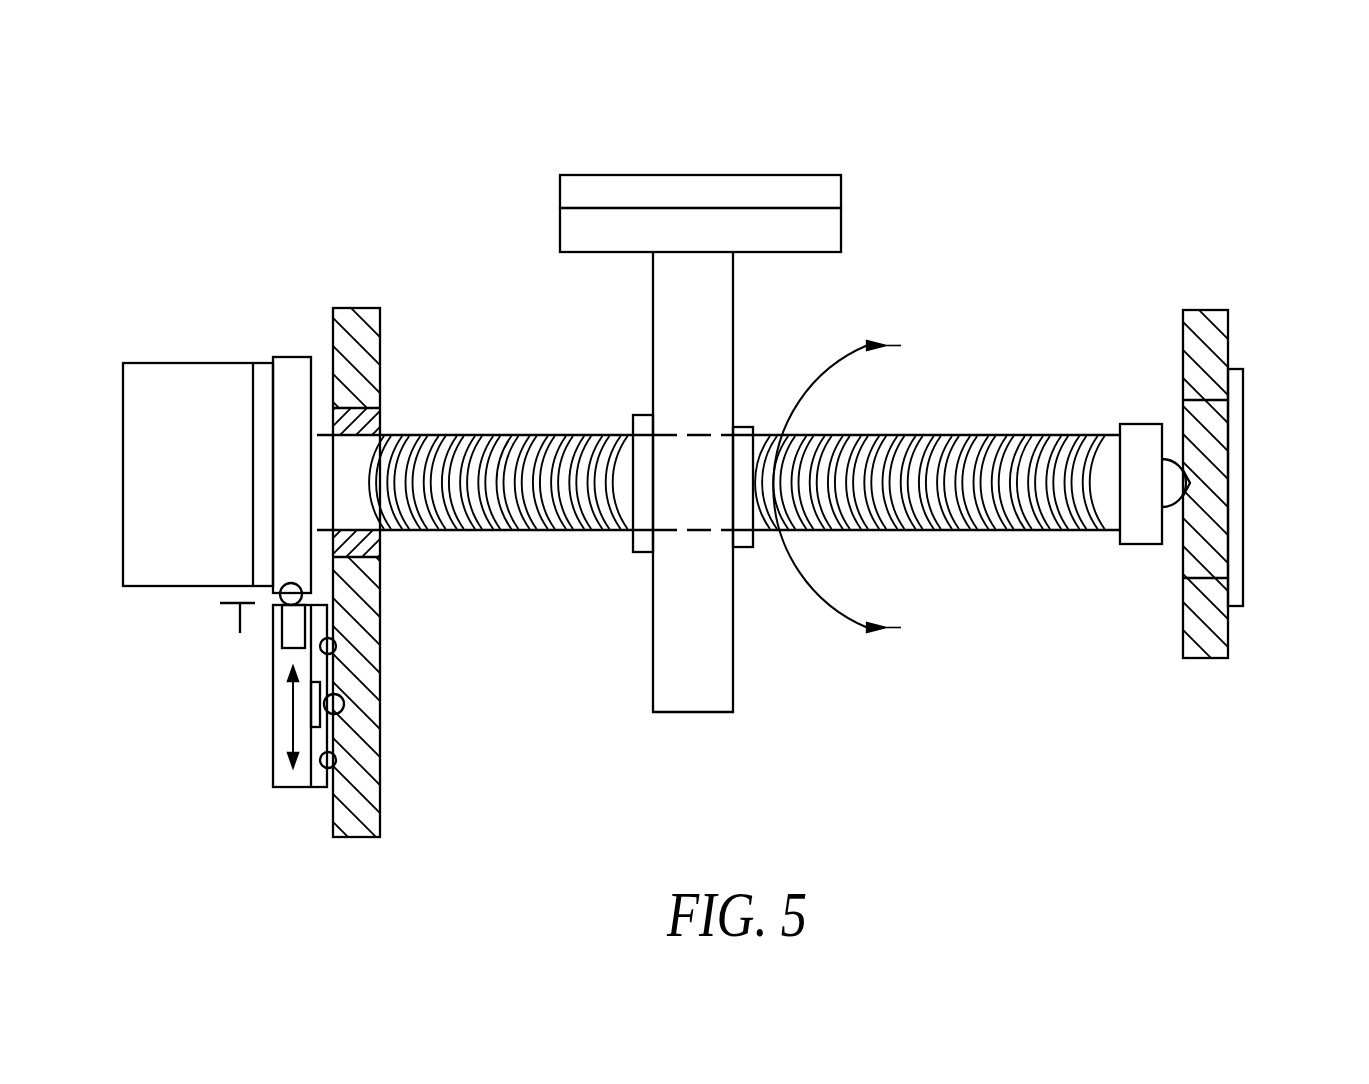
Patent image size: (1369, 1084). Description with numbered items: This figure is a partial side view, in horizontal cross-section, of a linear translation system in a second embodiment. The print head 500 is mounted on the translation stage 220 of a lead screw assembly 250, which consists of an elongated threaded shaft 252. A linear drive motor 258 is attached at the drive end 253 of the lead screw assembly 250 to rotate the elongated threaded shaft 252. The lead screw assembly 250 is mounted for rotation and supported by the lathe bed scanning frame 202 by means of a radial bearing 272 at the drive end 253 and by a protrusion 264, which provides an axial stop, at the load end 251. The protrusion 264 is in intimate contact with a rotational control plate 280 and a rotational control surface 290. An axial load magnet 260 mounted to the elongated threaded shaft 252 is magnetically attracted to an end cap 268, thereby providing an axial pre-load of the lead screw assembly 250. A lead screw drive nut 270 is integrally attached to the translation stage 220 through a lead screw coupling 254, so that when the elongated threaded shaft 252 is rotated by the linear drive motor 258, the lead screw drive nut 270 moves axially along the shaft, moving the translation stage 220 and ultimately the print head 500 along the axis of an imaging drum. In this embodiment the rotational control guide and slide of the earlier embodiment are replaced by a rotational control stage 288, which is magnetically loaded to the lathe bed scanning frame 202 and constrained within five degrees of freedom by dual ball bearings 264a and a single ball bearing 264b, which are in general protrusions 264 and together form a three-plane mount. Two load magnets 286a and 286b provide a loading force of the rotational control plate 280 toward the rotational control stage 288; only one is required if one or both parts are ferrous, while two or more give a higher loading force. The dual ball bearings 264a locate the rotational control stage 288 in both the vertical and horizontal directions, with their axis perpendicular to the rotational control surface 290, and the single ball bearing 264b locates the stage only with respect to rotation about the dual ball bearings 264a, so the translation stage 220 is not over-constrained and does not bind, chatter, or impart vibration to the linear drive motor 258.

The lead screw assembly 250 is at (668, 150).
The print head 500 is at (560, 190).
The translation stage 220 is at (560, 232).
The drive end 253 is at (385, 215).
The load end 251 is at (1317, 253).
The lathe bed scanning frame 202 is at (363, 308).
The linear drive motor 258 is at (205, 363).
The rotational control plate 280 is at (290, 357).
The radial bearing 272 is at (380, 421).
The elongated threaded shaft 252 is at (1025, 435).
The axial load magnet 260 is at (1140, 424).
The end cap 268 is at (1243, 409).
The protrusion 264 is at (290, 584).
The lead screw drive nut 270 is at (633, 552).
The lead screw coupling 254 is at (687, 712).
The rotational control surface 290 is at (240, 632).
The load magnet 286a is at (191, 646).
The load magnet 286b is at (282, 670).
The rotational control stage 288 is at (273, 762).
The dual ball bearings 264a is at (336, 646).
The single ball bearing 264b is at (344, 704).